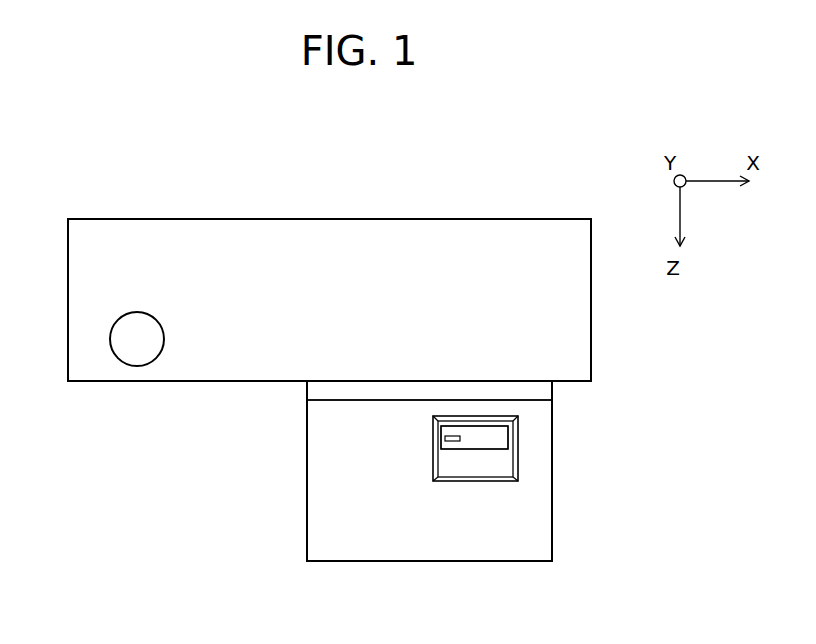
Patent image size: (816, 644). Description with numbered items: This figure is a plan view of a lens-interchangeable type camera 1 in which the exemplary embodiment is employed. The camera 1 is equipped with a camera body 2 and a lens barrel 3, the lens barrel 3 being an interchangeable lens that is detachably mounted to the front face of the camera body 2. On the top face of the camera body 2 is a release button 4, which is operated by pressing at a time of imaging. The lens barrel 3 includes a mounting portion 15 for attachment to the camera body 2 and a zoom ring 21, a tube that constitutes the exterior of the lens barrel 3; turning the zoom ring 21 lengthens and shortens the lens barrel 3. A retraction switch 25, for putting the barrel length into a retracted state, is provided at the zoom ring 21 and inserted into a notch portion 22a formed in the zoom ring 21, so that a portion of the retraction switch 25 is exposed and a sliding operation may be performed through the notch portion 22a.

The camera 1 is at (300, 198).
The camera body 2 is at (537, 243).
The lens barrel 3 is at (553, 548).
The release button 4 is at (128, 340).
The mounting portion 15 is at (544, 392).
The zoom ring 21 is at (544, 459).
The notch portion 22a is at (481, 472).
The retraction switch 25 is at (487, 432).